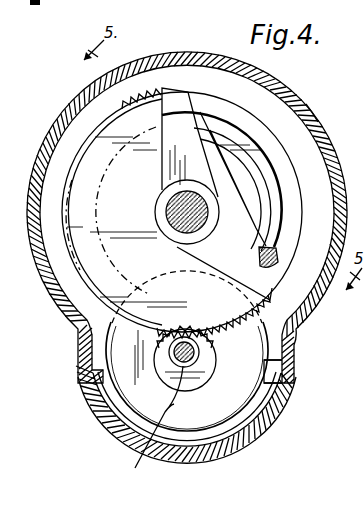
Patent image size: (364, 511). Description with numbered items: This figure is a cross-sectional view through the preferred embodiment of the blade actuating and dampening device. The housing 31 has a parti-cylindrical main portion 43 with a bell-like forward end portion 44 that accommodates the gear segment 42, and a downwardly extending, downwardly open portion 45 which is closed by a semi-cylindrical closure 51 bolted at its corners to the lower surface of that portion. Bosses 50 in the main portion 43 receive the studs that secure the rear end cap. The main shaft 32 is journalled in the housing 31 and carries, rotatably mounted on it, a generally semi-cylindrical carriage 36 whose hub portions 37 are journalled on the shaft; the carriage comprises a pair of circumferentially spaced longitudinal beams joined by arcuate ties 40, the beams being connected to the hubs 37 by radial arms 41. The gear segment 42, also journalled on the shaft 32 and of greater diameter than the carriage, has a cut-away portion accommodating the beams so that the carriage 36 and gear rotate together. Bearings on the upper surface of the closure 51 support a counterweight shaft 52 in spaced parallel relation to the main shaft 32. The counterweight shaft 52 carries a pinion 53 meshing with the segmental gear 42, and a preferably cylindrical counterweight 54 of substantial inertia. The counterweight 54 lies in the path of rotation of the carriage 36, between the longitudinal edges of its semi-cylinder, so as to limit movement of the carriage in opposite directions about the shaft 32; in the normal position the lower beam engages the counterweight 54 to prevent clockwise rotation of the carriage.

The housing 31 is at (72, 97).
The main shaft 32 is at (165, 207).
The carriage 36 is at (266, 171).
The hub portions 37 is at (178, 244).
The arcuate ties 40 is at (264, 207).
The radial arms 41 is at (198, 127).
The gear segment 42 is at (176, 96).
The main portion 43 is at (229, 128).
The forward end portion 44 is at (313, 114).
The downwardly open portion 45 is at (295, 356).
The bosses 50 is at (275, 257).
The closure 51 is at (236, 455).
The counterweight shaft 52 is at (199, 368).
The pinion 53 is at (170, 347).
The counterweight 54 is at (158, 427).